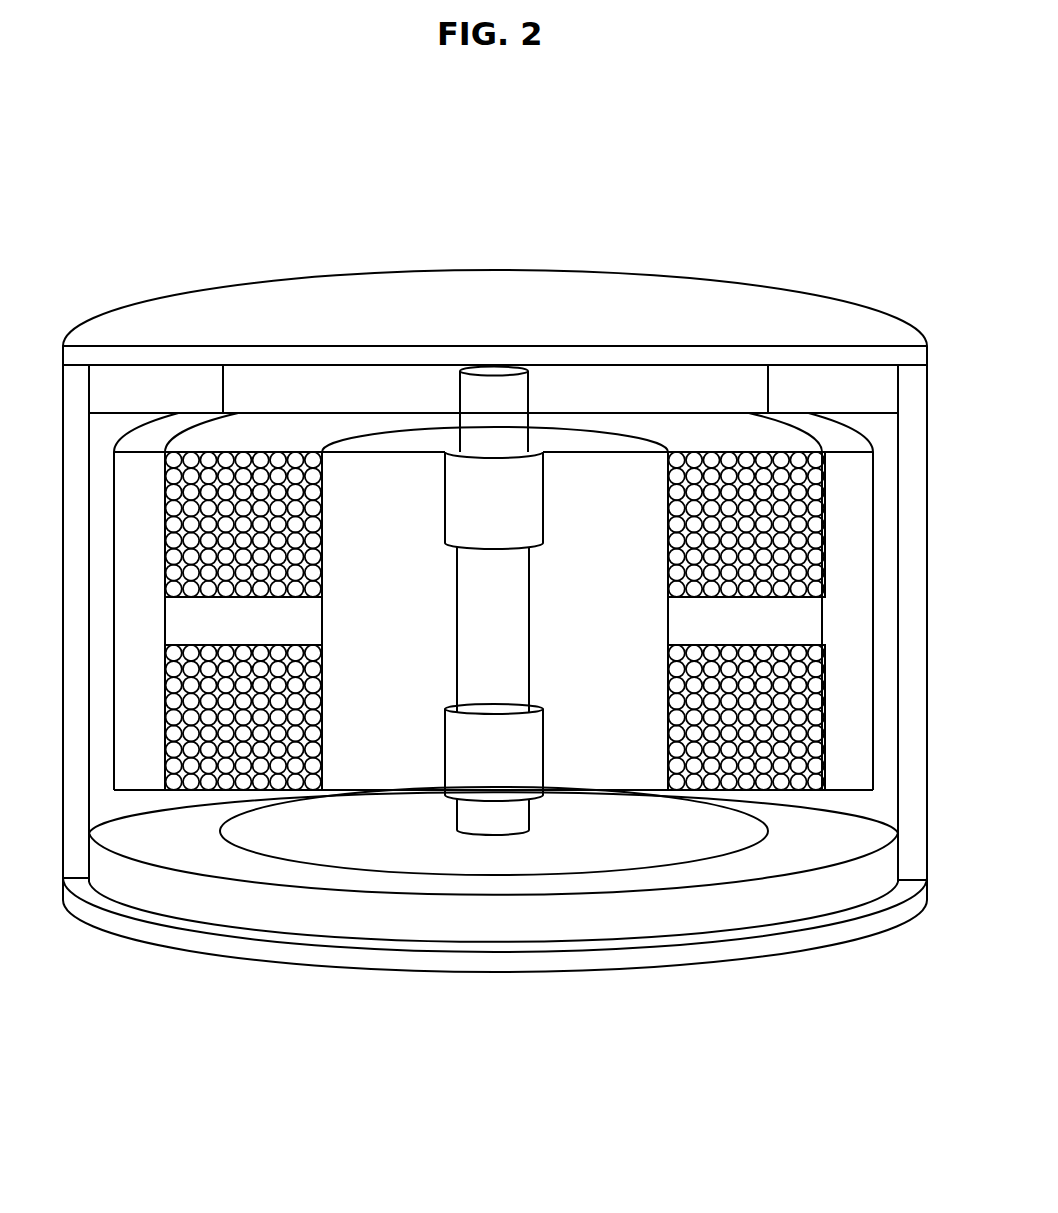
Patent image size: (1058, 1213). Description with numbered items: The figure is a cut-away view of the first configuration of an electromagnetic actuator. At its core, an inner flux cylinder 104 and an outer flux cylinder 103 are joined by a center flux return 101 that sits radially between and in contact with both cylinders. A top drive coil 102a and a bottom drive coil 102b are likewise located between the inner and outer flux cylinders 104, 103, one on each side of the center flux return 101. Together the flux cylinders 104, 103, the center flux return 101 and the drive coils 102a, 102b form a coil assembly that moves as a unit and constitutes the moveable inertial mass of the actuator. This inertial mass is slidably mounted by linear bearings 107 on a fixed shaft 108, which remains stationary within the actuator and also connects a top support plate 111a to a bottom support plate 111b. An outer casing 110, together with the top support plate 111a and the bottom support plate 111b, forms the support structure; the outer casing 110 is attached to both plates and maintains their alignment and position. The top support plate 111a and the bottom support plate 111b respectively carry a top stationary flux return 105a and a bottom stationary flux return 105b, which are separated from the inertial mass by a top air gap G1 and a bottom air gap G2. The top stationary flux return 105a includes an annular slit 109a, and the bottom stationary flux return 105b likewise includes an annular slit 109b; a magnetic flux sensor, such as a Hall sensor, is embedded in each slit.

The center flux return 101 is at (268, 612).
The top drive coil 102a is at (705, 454).
The bottom drive coil 102b is at (693, 772).
The outer flux cylinder 103 is at (133, 458).
The inner flux cylinder 104 is at (615, 442).
The top stationary flux return 105a is at (413, 390).
The bottom stationary flux return 105b is at (155, 880).
The linear bearings 107 is at (538, 456).
The shaft 108 is at (503, 818).
The annular slit 109a is at (223, 367).
The annular slit 109b is at (248, 850).
The outer casing 110 is at (68, 848).
The top support plate 111a is at (547, 292).
The bottom support plate 111b is at (674, 953).
The top air gap G1 is at (827, 427).
The bottom air gap G2 is at (813, 817).